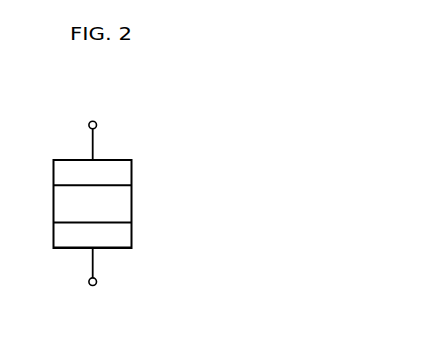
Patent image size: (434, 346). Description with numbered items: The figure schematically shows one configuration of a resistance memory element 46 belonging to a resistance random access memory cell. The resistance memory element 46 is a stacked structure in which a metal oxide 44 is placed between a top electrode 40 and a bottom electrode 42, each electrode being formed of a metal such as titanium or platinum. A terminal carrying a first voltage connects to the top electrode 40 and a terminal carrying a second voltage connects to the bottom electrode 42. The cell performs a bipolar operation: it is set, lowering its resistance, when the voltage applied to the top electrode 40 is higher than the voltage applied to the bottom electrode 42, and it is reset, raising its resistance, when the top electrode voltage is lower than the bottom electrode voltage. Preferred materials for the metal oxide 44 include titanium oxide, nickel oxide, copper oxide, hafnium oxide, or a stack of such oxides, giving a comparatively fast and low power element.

The resistance memory element 46 is at (135, 127).
The top electrode 40 is at (132, 167).
The metal oxide 44 is at (132, 200).
The bottom electrode 42 is at (132, 232).